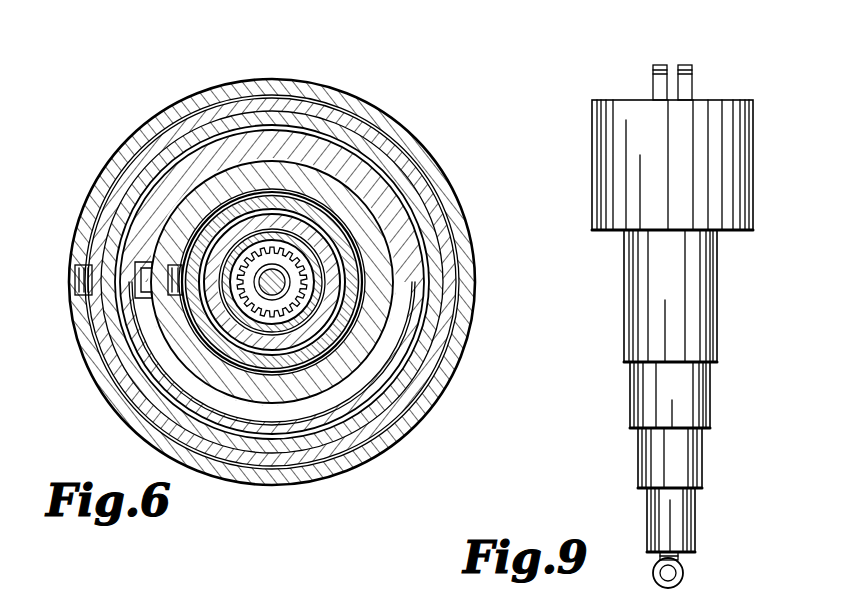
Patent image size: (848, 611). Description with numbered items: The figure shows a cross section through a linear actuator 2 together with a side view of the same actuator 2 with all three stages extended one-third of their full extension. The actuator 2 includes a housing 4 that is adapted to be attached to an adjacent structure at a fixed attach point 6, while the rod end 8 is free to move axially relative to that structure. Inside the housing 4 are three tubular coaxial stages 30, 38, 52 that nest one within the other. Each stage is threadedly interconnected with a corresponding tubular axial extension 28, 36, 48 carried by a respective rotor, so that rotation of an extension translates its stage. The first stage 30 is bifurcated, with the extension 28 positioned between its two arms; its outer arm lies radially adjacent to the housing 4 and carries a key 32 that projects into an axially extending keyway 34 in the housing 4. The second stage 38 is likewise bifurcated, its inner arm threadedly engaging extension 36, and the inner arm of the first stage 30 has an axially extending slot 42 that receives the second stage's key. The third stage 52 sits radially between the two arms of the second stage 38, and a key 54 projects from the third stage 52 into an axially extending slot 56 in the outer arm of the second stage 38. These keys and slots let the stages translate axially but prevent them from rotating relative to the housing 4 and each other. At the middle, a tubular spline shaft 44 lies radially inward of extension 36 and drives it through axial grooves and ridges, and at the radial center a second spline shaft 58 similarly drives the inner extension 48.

In FIG. 9, the linear actuator 2 is at (590, 82).
In FIG. 6, the housing 4 is at (106, 188).
In FIG. 9, the housing 4 is at (676, 153).
In FIG. 9, the fixed attach point 6 is at (698, 72).
In FIG. 9, the rod end 8 is at (685, 580).
In FIG. 6, the tubular axial extension 28 is at (176, 148).
In FIG. 6, the first stage 30 is at (140, 166).
In FIG. 9, the first stage 30 is at (686, 396).
In FIG. 6, the key 32 is at (76, 268).
In FIG. 6, the keyway 34 is at (80, 296).
In FIG. 6, the tubular axial extension 36 is at (384, 234).
In FIG. 6, the second stage 38 is at (278, 178).
In FIG. 9, the second stage 38 is at (685, 461).
In FIG. 6, the slot 42 is at (118, 232).
In FIG. 6, the tubular spline shaft 44 is at (318, 284).
In FIG. 6, the inner extension 48 is at (290, 296).
In FIG. 6, the third stage 52 is at (336, 190).
In FIG. 9, the third stage 52 is at (684, 544).
In FIG. 6, the key 54 is at (168, 296).
In FIG. 6, the slot 56 is at (174, 308).
In FIG. 6, the second spline shaft 58 is at (282, 312).